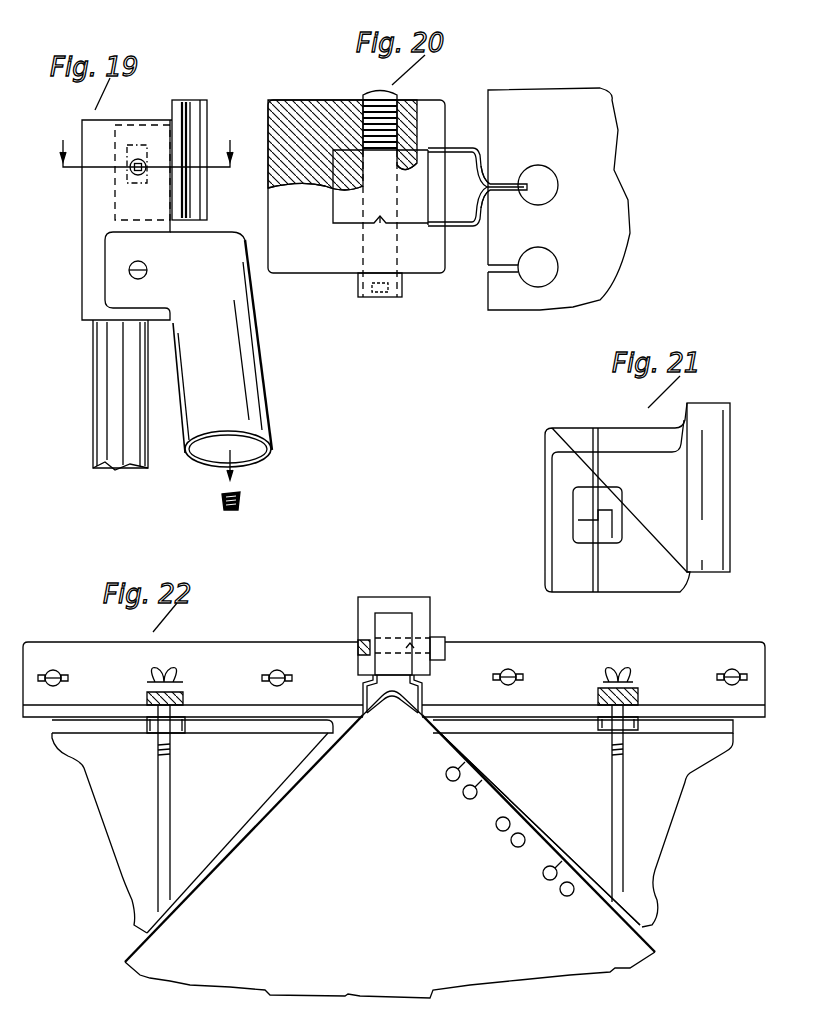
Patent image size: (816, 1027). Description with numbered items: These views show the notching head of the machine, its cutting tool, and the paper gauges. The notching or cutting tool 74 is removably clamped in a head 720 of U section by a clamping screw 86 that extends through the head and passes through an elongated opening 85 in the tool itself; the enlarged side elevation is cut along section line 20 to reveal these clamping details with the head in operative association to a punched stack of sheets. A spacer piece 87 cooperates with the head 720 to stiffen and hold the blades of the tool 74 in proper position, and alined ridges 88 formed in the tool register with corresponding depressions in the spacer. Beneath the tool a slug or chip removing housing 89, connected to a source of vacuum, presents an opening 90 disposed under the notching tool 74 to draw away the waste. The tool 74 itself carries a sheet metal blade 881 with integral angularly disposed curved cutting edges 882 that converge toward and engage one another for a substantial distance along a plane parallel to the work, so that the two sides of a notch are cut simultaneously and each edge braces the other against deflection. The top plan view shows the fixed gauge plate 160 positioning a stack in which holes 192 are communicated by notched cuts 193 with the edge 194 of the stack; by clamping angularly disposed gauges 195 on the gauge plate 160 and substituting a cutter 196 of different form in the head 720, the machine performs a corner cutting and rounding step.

In FIG. 19, the section line 20 is at (151, 145).
In FIG. 19, the notching or cutting tool 74 is at (177, 117).
In FIG. 20, the notching or cutting tool 74 is at (464, 148).
In FIG. 21, the notching or cutting tool 74 is at (618, 428).
In FIG. 19, the elongated opening 85 is at (130, 145).
In FIG. 21, the elongated opening 85 is at (575, 503).
In FIG. 19, the clamping screw 86 is at (140, 158).
In FIG. 20, the clamping screw 86 is at (382, 297).
In FIG. 22, the clamping screw 86 is at (445, 638).
In FIG. 20, the spacer piece 87 is at (343, 197).
In FIG. 22, the spacer piece 87 is at (388, 623).
In FIG. 20, the alined ridges 88 is at (384, 226).
In FIG. 21, the alined ridges 88 is at (595, 428).
In FIG. 22, the alined ridges 88 is at (417, 642).
In FIG. 19, the housing 89 is at (250, 387).
In FIG. 19, the opening 90 is at (210, 230).
In FIG. 22, the gauge plate 160 is at (240, 652).
In FIG. 22, the holes 192 is at (468, 800).
In FIG. 20, the notched cuts 193 is at (505, 273).
In FIG. 22, the notched cuts 193 is at (490, 785).
In FIG. 22, the edge of the stack 194 is at (538, 833).
In FIG. 22, the angularly disposed gauges 195 is at (257, 823).
In FIG. 22, the cutter 196 is at (363, 688).
In FIG. 19, the head 720 is at (92, 197).
In FIG. 20, the head 720 is at (300, 105).
In FIG. 22, the head 720 is at (422, 603).
In FIG. 19, the sheet metal blade 881 is at (198, 135).
In FIG. 20, the sheet metal blade 881 is at (508, 193).
In FIG. 21, the sheet metal blade 881 is at (718, 490).
In FIG. 20, the curved cutting edges 882 is at (490, 180).